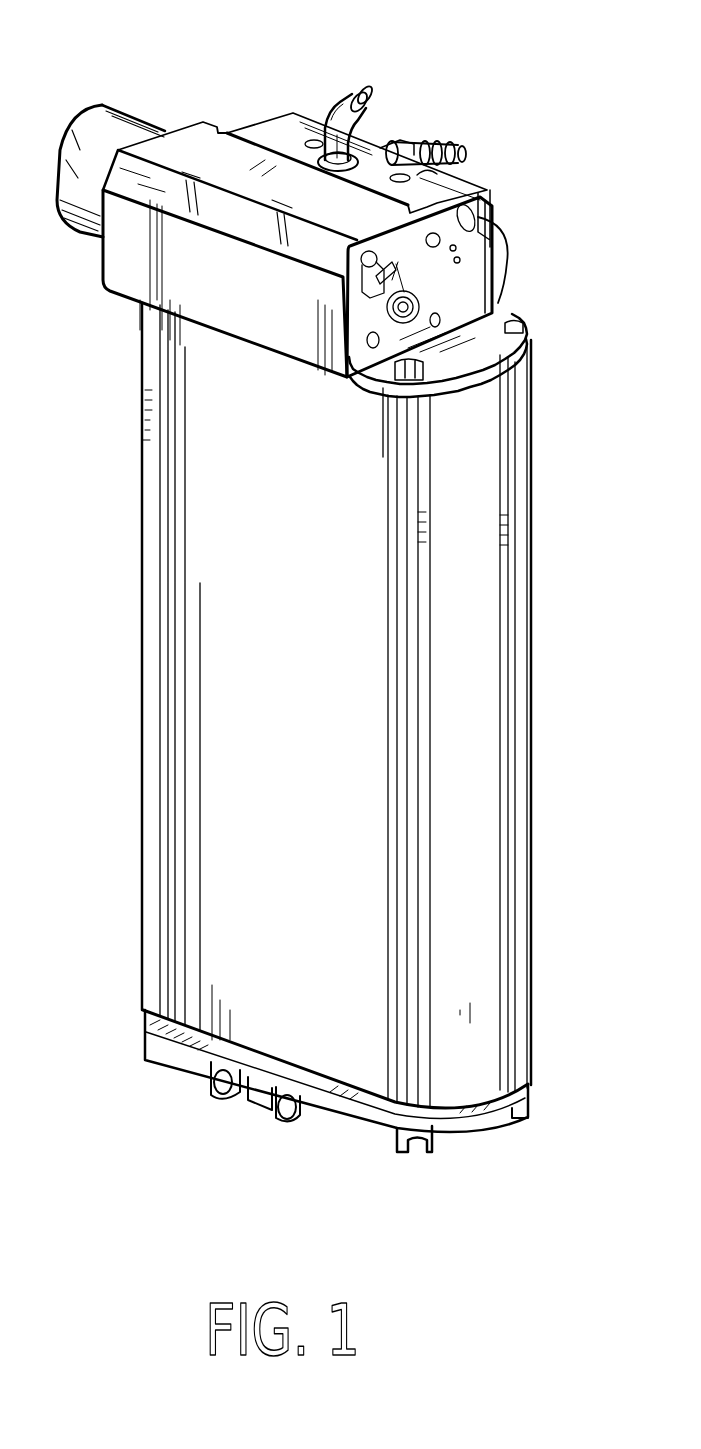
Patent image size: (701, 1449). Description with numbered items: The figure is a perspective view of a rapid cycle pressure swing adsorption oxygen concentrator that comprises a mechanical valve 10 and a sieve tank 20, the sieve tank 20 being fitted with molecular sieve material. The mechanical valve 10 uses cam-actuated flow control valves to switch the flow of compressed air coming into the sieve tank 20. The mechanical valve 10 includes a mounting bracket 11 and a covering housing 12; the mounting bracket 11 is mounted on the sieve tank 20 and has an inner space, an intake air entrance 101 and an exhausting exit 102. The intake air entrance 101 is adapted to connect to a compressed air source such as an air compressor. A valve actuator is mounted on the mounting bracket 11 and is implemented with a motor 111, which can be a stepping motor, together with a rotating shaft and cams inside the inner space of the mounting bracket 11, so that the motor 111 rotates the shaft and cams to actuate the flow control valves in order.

The mechanical valve 10 is at (325, 576).
The mounting bracket 11 is at (484, 290).
The covering housing 12 is at (120, 279).
The sieve tank 20 is at (503, 557).
The intake air entrance 101 is at (363, 95).
The exhausting exit 102 is at (470, 152).
The motor 111 is at (112, 108).